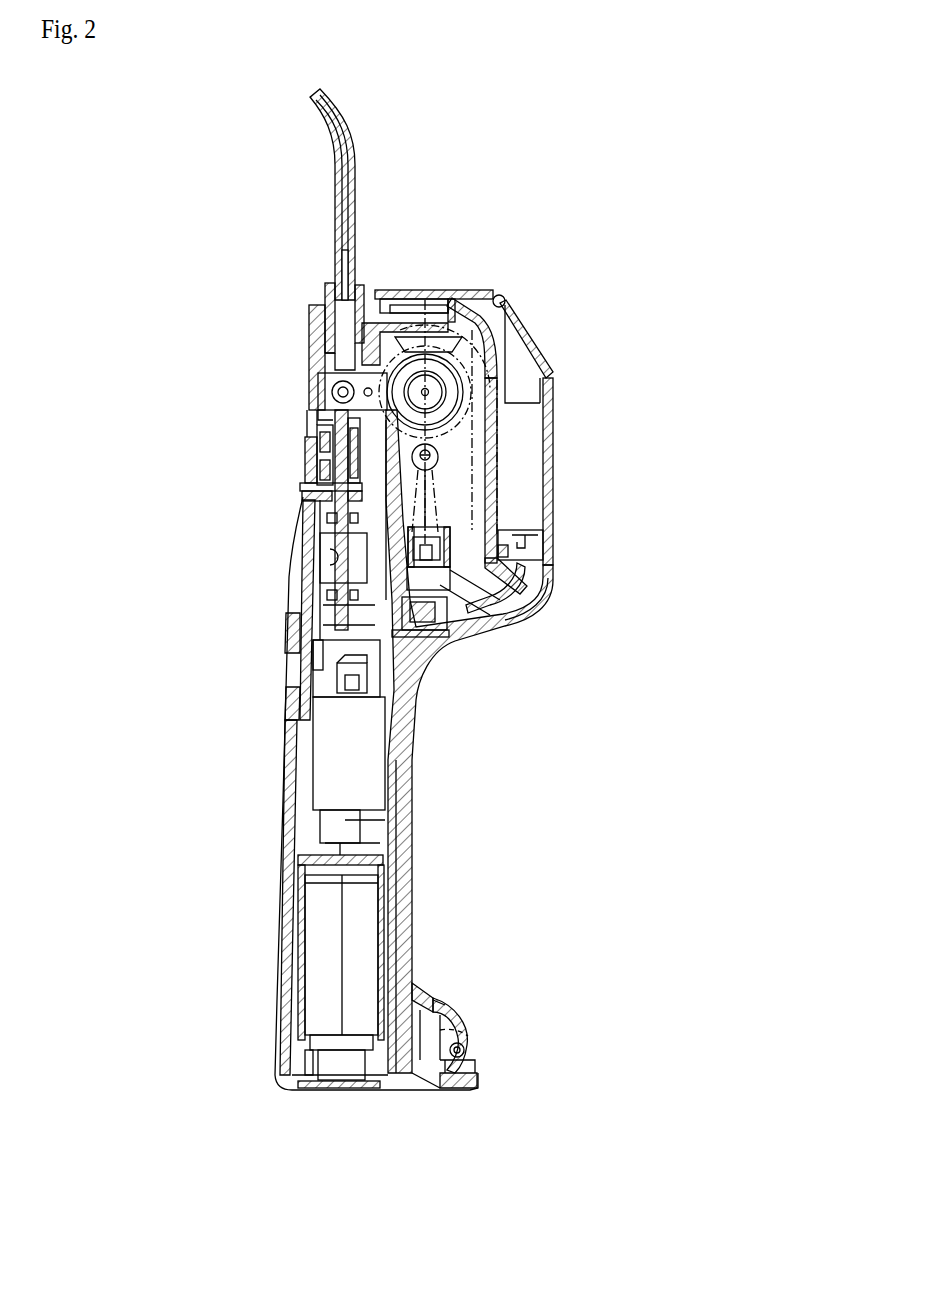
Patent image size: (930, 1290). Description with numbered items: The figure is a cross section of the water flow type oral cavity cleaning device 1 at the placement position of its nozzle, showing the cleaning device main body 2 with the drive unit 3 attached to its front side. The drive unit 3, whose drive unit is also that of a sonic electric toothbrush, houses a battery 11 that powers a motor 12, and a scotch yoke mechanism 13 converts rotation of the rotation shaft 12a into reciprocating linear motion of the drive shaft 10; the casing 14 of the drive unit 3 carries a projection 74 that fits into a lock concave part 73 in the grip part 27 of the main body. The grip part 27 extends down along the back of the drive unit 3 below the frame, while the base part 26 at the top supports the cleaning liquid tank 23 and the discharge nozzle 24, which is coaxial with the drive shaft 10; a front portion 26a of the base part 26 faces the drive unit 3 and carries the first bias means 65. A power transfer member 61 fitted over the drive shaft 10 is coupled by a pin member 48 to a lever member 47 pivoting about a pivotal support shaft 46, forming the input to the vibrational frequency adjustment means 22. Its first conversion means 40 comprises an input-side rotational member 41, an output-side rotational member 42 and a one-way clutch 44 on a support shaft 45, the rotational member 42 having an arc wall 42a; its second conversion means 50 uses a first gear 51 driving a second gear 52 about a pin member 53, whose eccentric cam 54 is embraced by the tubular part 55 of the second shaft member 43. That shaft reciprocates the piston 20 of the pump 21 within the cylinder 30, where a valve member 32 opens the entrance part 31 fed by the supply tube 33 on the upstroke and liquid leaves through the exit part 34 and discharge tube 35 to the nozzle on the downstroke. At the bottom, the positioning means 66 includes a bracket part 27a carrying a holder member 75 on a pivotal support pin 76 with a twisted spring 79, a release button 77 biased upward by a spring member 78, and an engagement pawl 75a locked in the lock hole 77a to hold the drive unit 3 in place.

The water flow type oral cavity cleaning device 1 is at (652, 250).
The cleaning device main body 2 is at (572, 502).
The drive unit 3 is at (260, 894).
The drive shaft 10 is at (307, 448).
The battery 11 is at (310, 942).
The motor 12 is at (325, 750).
The rotation shaft 12a is at (337, 682).
The scotch yoke mechanism 13 is at (320, 663).
The casing 14 is at (290, 828).
The piston 20 is at (507, 600).
The pump 21 is at (447, 563).
The vibrational frequency adjustment means 22 is at (430, 338).
The cleaning liquid tank 23 is at (562, 392).
The discharge nozzle 24 is at (357, 178).
The base part 26 is at (517, 617).
The front portion of the base part 26a is at (310, 320).
The grip part 27 is at (400, 855).
The bracket part 27a is at (480, 1022).
The cylinder 30 is at (464, 553).
The entrance part 31 is at (430, 640).
The valve member 32 is at (435, 633).
The supply tube 33 is at (510, 618).
The exit part 34 is at (455, 590).
The discharge tube 35 is at (475, 472).
The first conversion means 40 is at (472, 348).
The input-side rotational member 41 is at (552, 380).
The output-side rotational member 42 is at (472, 338).
The arc wall 42a is at (455, 355).
The second shaft member 43 is at (480, 493).
The one-way clutch 44 is at (458, 423).
The support shaft 45 is at (424, 388).
The pivotal support shaft 46 is at (387, 300).
The lever member 47 is at (336, 376).
The pin member 48 is at (332, 392).
The second conversion means 50 is at (460, 505).
The first gear 51 is at (496, 292).
The second gear 52 is at (455, 445).
The pin member 53 is at (310, 472).
The eccentric cam 54 is at (307, 500).
The tubular part 55 is at (310, 490).
The power transfer member 61 is at (307, 413).
The first bias means 65 is at (290, 431).
The positioning means 66 is at (542, 983).
The lock concave part 73 is at (405, 922).
The projection 74 is at (400, 962).
The holder member 75 is at (338, 1089).
The engagement pawl 75a is at (450, 1089).
The pivotal support pin 76 is at (465, 1050).
The release button 77 is at (430, 1000).
The lock hole 77a is at (460, 1065).
The spring member 78 is at (445, 1005).
The twisted spring 79 is at (470, 1035).